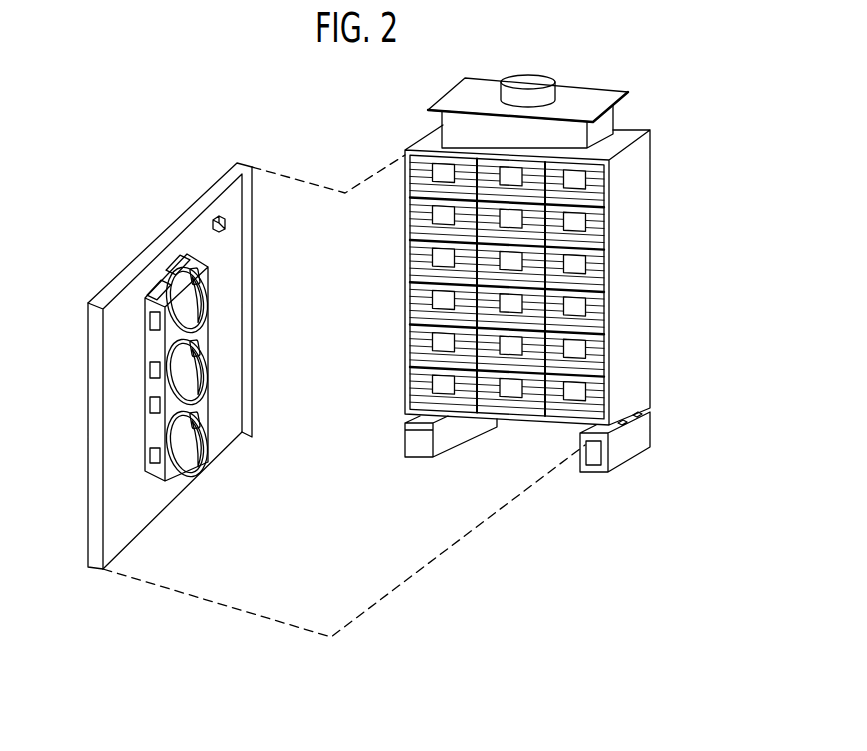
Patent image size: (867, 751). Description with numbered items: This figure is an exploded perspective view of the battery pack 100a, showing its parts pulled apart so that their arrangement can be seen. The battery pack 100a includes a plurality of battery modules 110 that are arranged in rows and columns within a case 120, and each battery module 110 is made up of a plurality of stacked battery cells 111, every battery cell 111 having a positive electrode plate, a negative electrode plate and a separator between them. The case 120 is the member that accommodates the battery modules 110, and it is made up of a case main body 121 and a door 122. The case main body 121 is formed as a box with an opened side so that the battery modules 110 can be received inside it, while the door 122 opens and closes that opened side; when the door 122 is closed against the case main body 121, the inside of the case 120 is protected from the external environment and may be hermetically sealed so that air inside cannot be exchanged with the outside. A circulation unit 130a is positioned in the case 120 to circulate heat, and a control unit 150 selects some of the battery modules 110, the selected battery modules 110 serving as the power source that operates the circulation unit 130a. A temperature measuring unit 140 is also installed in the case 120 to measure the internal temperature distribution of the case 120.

The battery pack 100a is at (118, 101).
The battery module 110 is at (610, 207).
The battery cell 111 is at (586, 184).
The case 120 is at (290, 111).
The case main body 121 is at (428, 142).
The door 122 is at (175, 223).
The circulation unit 130a is at (206, 454).
The temperature measuring unit 140 is at (578, 200).
The control unit 150 is at (226, 220).